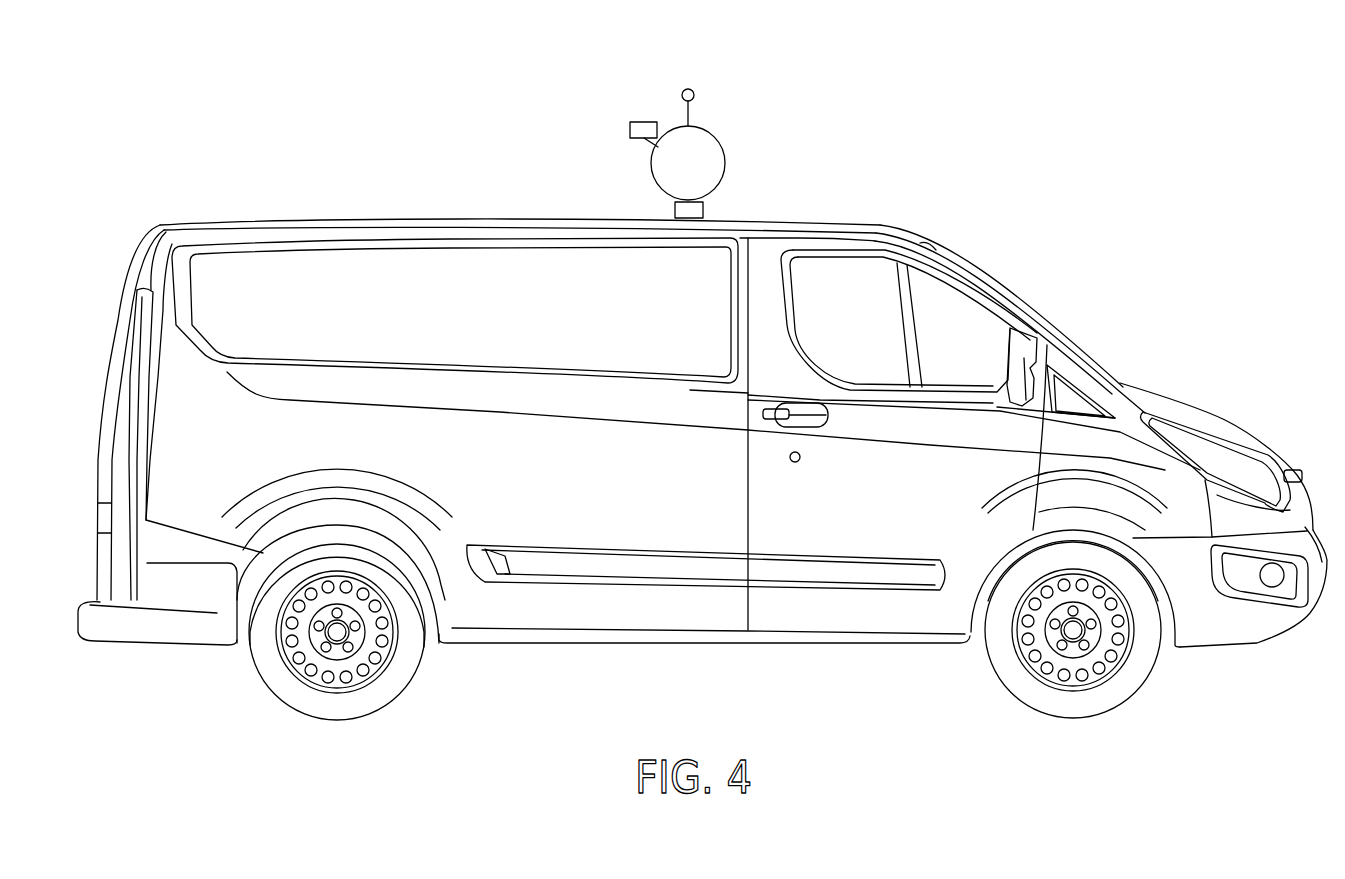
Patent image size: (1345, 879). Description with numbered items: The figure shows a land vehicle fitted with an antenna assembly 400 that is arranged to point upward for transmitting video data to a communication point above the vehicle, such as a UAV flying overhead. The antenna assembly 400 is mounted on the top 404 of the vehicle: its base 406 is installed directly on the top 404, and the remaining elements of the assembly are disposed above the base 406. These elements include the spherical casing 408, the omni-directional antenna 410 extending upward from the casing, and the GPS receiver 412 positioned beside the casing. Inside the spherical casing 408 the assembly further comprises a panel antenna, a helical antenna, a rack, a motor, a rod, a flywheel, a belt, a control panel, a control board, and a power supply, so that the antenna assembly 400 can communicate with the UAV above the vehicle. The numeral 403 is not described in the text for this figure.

The antenna assembly 400 is at (680, 125).
The windshield pillar 403 is at (1086, 372).
The top of the vehicle 404 is at (573, 213).
The base 406 is at (705, 207).
The spherical casing 408 is at (717, 165).
The omni-directional antenna 410 is at (694, 101).
The GPS receiver 412 is at (630, 131).